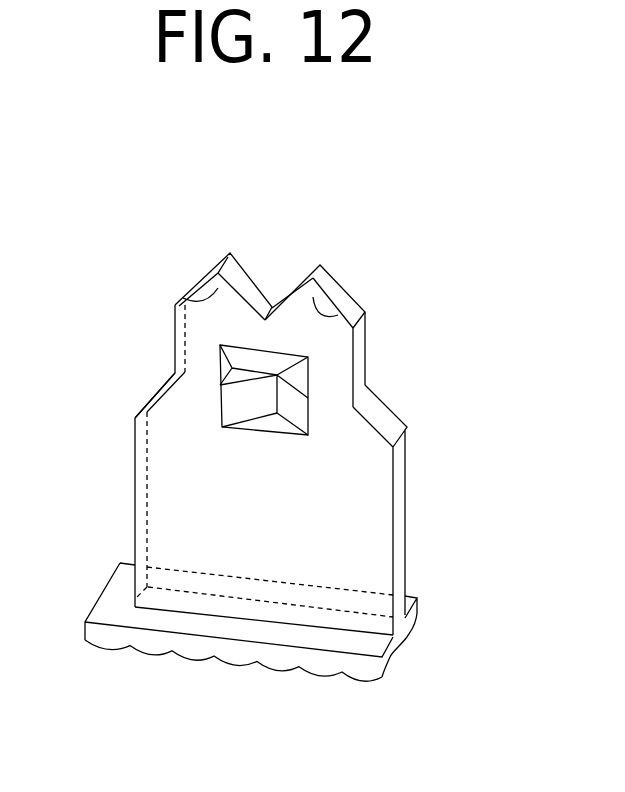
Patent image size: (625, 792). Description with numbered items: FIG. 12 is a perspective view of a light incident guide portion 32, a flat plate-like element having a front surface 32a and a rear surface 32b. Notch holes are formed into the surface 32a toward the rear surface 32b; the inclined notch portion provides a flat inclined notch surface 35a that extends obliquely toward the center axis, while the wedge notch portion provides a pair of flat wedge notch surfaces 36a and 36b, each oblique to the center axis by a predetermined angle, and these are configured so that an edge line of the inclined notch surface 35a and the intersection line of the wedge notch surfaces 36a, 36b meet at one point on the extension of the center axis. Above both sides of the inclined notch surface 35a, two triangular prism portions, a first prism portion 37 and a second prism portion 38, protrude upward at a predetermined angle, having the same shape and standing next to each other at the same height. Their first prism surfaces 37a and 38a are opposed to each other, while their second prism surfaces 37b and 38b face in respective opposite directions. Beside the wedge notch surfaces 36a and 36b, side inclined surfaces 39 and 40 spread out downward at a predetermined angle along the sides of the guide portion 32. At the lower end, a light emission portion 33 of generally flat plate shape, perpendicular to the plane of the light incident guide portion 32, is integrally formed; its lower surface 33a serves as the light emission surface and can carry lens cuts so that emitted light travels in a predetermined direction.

The light incident guide portion 32 is at (175, 322).
The surface 32a is at (208, 343).
The rear surface 32b is at (335, 340).
The light emission portion 33 is at (106, 585).
The lower surface 33a is at (193, 665).
The inclined notch surface 35a is at (297, 366).
The wedge notch surface 36a is at (233, 402).
The wedge notch surface 36b is at (294, 404).
The first prism portion 37 is at (183, 298).
The first prism surface 37a is at (246, 273).
The second prism surface 37b is at (205, 273).
The second prism portion 38 is at (357, 290).
The first prism surface 38a is at (289, 292).
The second prism surface 38b is at (337, 281).
The side inclined surface 39 is at (152, 393).
The side inclined surface 40 is at (397, 415).